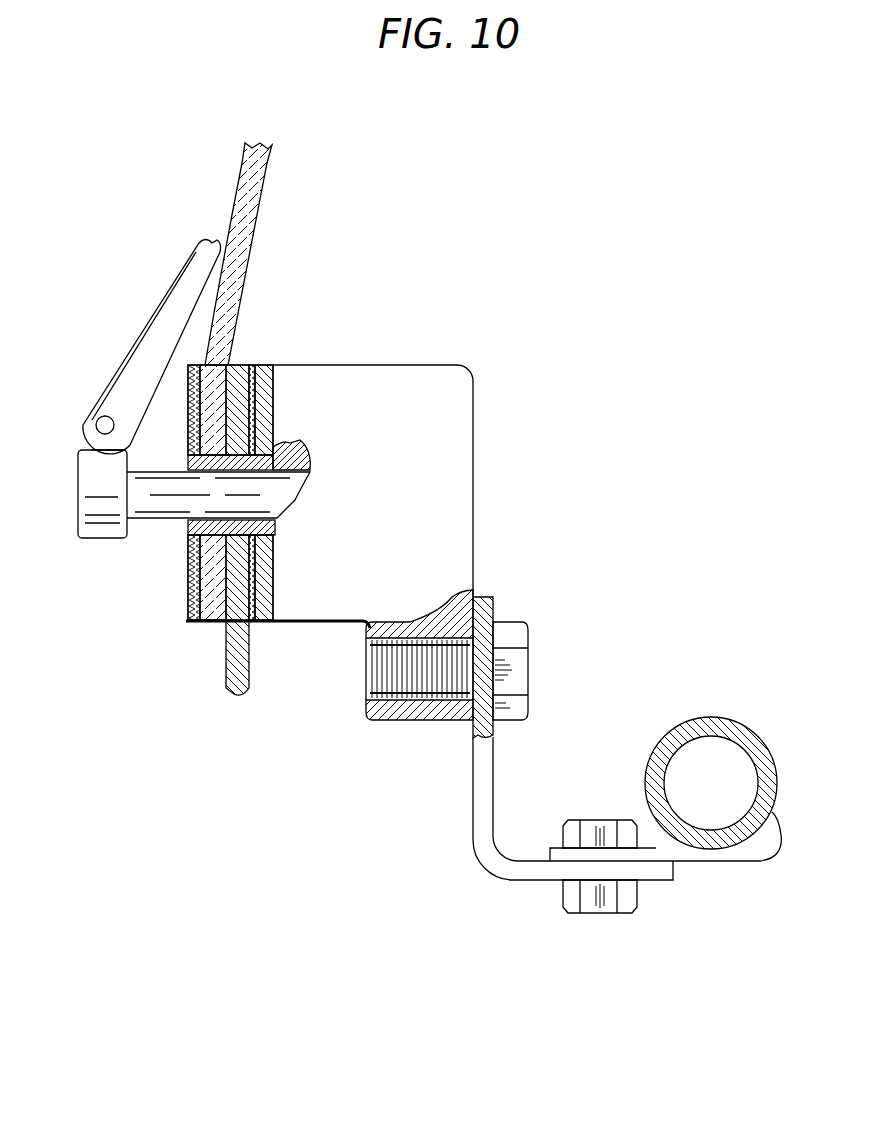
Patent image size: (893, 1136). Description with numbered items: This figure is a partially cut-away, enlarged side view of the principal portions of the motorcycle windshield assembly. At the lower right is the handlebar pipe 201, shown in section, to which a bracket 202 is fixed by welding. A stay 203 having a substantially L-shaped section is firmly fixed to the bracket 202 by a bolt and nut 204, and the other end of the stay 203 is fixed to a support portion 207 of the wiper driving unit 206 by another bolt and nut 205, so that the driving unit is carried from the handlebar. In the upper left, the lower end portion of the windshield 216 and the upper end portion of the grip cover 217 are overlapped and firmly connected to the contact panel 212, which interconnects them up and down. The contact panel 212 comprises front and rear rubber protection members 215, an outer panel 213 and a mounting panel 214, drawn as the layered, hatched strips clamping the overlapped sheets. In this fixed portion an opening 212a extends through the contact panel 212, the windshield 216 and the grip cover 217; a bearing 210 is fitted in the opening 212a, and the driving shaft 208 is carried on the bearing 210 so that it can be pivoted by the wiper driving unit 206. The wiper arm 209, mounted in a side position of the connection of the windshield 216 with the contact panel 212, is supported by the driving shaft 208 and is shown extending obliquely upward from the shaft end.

The handlebar pipe 201 is at (710, 717).
The bracket 202 is at (745, 848).
The stay 203 is at (483, 820).
The bolt and nut 204 is at (598, 897).
The bolt and nut 205 is at (513, 683).
The wiper driving unit 206 is at (453, 448).
The support portion 207 is at (408, 708).
The driving shaft 208 is at (148, 497).
The wiper arm 209 is at (157, 330).
The bearing 210 is at (185, 527).
The contact panel 212 is at (178, 643).
The opening 212a is at (268, 523).
The outer panel 213 is at (188, 625).
The mounting panel 214 is at (262, 600).
The rubber protection members 215 is at (195, 625).
The windshield 216 is at (253, 217).
The grip cover 217 is at (240, 383).